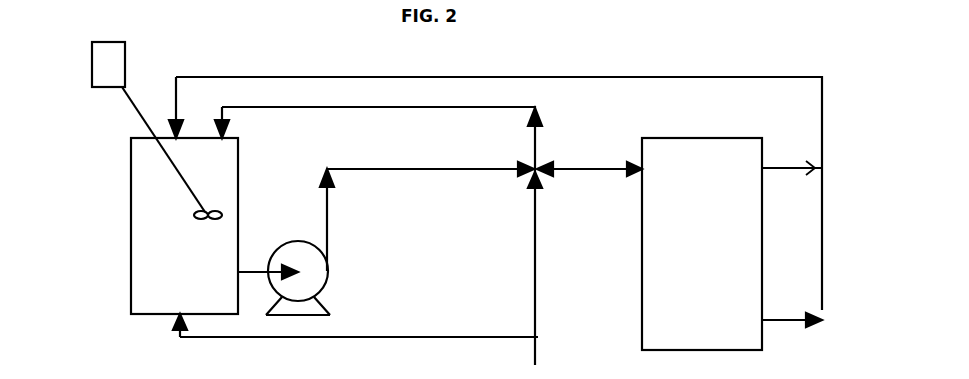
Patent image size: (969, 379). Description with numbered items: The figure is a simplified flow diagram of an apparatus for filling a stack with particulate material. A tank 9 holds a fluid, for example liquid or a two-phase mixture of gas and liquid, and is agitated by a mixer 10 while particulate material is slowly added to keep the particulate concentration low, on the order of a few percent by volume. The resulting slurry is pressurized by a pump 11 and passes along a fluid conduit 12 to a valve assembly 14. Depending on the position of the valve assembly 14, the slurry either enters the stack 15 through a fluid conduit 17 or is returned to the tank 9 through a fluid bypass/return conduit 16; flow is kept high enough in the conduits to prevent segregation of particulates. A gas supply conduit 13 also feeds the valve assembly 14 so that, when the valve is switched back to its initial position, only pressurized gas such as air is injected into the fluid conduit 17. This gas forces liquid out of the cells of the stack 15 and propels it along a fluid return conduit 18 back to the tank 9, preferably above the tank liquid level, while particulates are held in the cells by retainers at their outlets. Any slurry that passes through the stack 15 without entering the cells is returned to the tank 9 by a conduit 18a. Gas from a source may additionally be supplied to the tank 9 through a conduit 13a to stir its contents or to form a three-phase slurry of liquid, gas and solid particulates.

The tank 9 is at (150, 244).
The mixer 10 is at (132, 102).
The pump 11 is at (312, 287).
The fluid conduit 12 is at (435, 170).
The gas supply conduit 13 is at (536, 226).
The conduit 13a is at (256, 340).
The valve assembly 14 is at (545, 162).
The stack 15 is at (651, 326).
The fluid bypass/return conduit 16 is at (537, 130).
The fluid conduit 17 is at (575, 170).
The fluid return conduit 18 is at (822, 172).
The conduit 18a is at (785, 165).